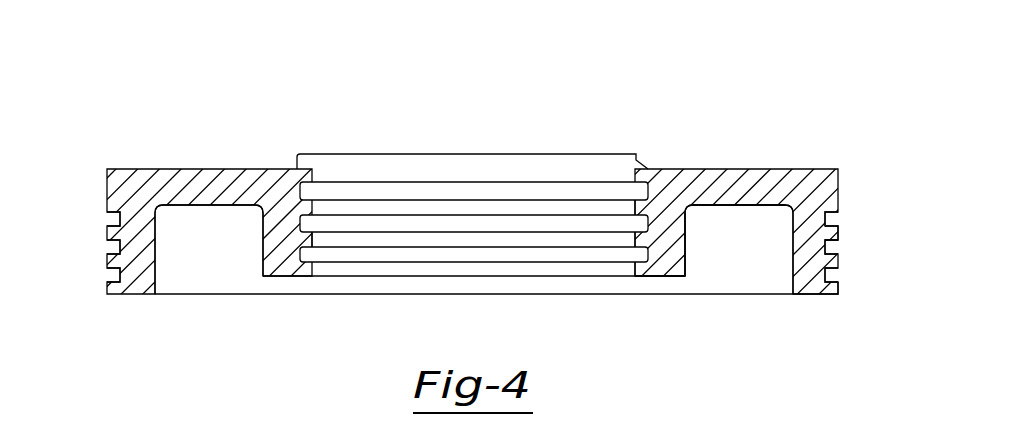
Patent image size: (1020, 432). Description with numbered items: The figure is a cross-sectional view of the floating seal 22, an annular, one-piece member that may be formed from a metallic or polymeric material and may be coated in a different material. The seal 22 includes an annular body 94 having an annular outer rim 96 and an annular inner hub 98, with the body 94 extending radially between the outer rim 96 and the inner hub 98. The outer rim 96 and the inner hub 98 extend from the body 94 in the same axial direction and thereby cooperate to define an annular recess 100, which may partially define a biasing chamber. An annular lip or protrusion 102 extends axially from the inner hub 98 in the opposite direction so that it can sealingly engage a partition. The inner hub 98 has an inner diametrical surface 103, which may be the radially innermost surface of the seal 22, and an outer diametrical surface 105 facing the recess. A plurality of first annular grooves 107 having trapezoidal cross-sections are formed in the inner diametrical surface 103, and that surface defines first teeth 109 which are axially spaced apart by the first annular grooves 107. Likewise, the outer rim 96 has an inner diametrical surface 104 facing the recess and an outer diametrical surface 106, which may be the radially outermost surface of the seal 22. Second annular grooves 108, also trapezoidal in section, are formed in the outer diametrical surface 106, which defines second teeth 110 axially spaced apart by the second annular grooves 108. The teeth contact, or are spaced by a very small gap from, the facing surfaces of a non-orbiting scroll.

The seal 22 is at (663, 98).
The annular body 94 is at (773, 180).
The annular outer rim 96 is at (807, 282).
The annular inner hub 98 is at (665, 263).
The annular recess 100 is at (743, 220).
The annular lip 102 is at (306, 153).
The inner diametrical surface of the inner hub 103 is at (315, 235).
The inner diametrical surface of the outer rim 104 is at (793, 258).
The outer diametrical surface of the inner hub 105 is at (263, 258).
The outer diametrical surface of the outer rim 106 is at (838, 232).
The first annular grooves 107 is at (302, 223).
The second annular grooves 108 is at (112, 278).
The first teeth 109 is at (632, 238).
The second teeth 110 is at (840, 288).